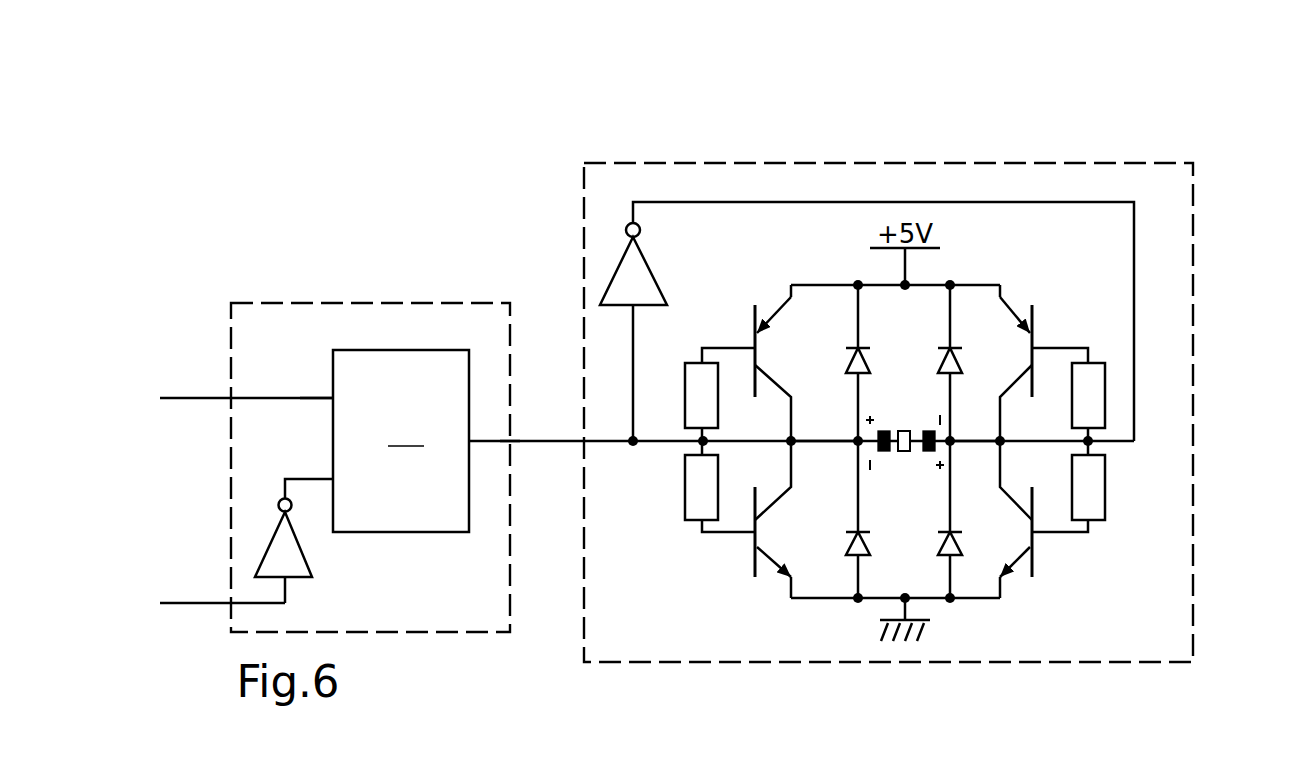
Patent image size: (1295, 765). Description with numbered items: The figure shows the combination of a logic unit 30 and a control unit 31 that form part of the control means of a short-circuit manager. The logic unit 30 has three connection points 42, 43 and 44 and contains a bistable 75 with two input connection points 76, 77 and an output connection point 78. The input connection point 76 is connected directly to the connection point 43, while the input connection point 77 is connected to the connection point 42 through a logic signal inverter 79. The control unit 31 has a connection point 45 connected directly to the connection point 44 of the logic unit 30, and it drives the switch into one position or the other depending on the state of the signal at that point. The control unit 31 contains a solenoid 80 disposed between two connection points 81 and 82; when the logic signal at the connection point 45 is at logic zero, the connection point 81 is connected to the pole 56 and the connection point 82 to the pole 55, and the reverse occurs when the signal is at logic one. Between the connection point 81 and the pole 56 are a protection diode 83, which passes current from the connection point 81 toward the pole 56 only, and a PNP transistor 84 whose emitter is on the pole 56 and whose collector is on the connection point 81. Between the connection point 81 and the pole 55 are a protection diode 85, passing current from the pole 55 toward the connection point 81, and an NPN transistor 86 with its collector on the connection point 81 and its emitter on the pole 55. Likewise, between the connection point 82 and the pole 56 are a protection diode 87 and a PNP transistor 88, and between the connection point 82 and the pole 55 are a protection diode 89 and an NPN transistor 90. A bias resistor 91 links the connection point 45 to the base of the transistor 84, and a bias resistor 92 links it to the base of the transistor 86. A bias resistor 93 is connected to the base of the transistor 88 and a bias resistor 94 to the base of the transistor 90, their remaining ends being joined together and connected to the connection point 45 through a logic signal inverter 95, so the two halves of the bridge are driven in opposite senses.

The logic unit 30 is at (231, 325).
The control unit 31 is at (1193, 200).
The connection point 42 is at (232, 603).
The connection point 43 is at (230, 398).
The connection point 44 is at (521, 447).
The connection point 45 is at (578, 440).
The pole 55 is at (877, 640).
The pole 56 is at (873, 258).
The bistable 75 is at (401, 441).
The input connection point 76 is at (333, 398).
The input connection point 77 is at (333, 480).
The output connection point 78 is at (472, 437).
The logic signal inverter 79 is at (272, 556).
The solenoid 80 is at (904, 404).
The connection point 81 is at (850, 443).
The connection point 82 is at (947, 452).
The protection diode 83 is at (855, 365).
The PNP transistor 84 is at (755, 320).
The protection diode 85 is at (845, 540).
The NPN transistor 86 is at (755, 558).
The protection diode 87 is at (955, 365).
The PNP transistor 88 is at (1035, 320).
The protection diode 89 is at (955, 545).
The NPN transistor 90 is at (1040, 557).
The bias resistor 91 is at (703, 400).
The bias resistor 92 is at (700, 470).
The bias resistor 93 is at (1090, 385).
The bias resistor 94 is at (1090, 480).
The logic signal inverter 95 is at (628, 270).